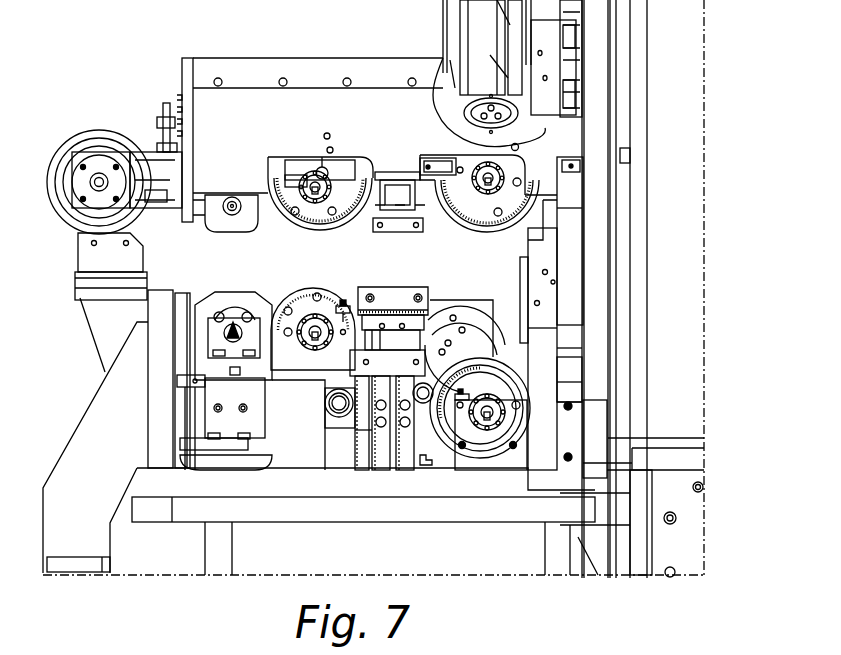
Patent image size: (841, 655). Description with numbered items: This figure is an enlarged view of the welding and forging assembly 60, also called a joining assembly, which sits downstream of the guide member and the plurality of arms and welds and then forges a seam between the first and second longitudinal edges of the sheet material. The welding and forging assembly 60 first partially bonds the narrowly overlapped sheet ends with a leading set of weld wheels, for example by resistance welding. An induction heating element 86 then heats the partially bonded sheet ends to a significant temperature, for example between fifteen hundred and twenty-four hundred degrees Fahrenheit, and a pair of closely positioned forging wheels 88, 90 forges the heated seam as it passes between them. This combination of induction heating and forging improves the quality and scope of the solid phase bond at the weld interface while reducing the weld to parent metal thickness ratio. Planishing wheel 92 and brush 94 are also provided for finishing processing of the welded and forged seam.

The welding and forging assembly 60 is at (172, 50).
The induction heating element 86 is at (397, 303).
The forging wheel 88 is at (317, 203).
The forging wheel 90 is at (305, 316).
The planishing wheel 92 is at (221, 231).
The brush 94 is at (68, 132).